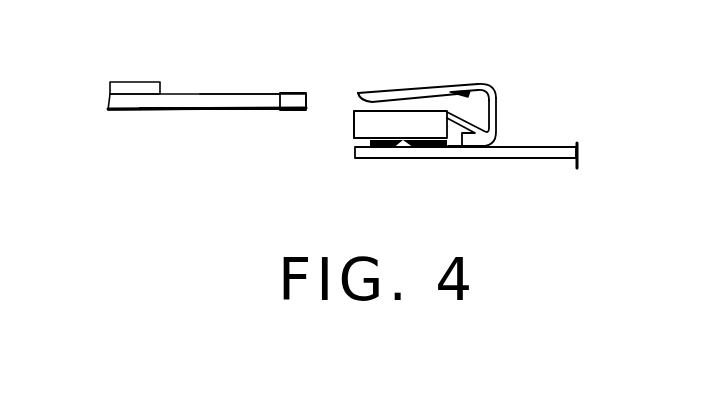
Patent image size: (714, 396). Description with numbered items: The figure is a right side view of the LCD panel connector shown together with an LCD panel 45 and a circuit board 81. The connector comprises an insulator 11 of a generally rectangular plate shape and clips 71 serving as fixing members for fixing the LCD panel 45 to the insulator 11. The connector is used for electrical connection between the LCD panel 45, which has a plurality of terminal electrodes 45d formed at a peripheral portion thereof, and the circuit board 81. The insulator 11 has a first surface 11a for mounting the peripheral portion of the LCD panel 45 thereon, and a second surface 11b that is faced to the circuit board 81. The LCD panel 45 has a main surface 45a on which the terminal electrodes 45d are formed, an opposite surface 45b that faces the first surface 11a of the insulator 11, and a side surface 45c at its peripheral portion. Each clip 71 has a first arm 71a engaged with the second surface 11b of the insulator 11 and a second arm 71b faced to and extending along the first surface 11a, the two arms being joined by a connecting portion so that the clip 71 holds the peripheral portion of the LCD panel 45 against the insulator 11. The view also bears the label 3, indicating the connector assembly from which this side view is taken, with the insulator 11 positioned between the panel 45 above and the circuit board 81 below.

The clip 3 is at (494, 89).
The insulator 11 is at (354, 122).
The first surface 11a is at (353, 105).
The second surface 11b is at (385, 146).
The LCD panel 45 is at (108, 101).
The main surface 45a is at (186, 93).
The opposite surface 45b is at (205, 109).
The side surface 45c is at (309, 102).
The terminal electrodes 45d is at (290, 95).
The clip 71 is at (483, 82).
The first arm 71a is at (462, 136).
The second arm 71b is at (413, 86).
The circuit board 81 is at (545, 158).